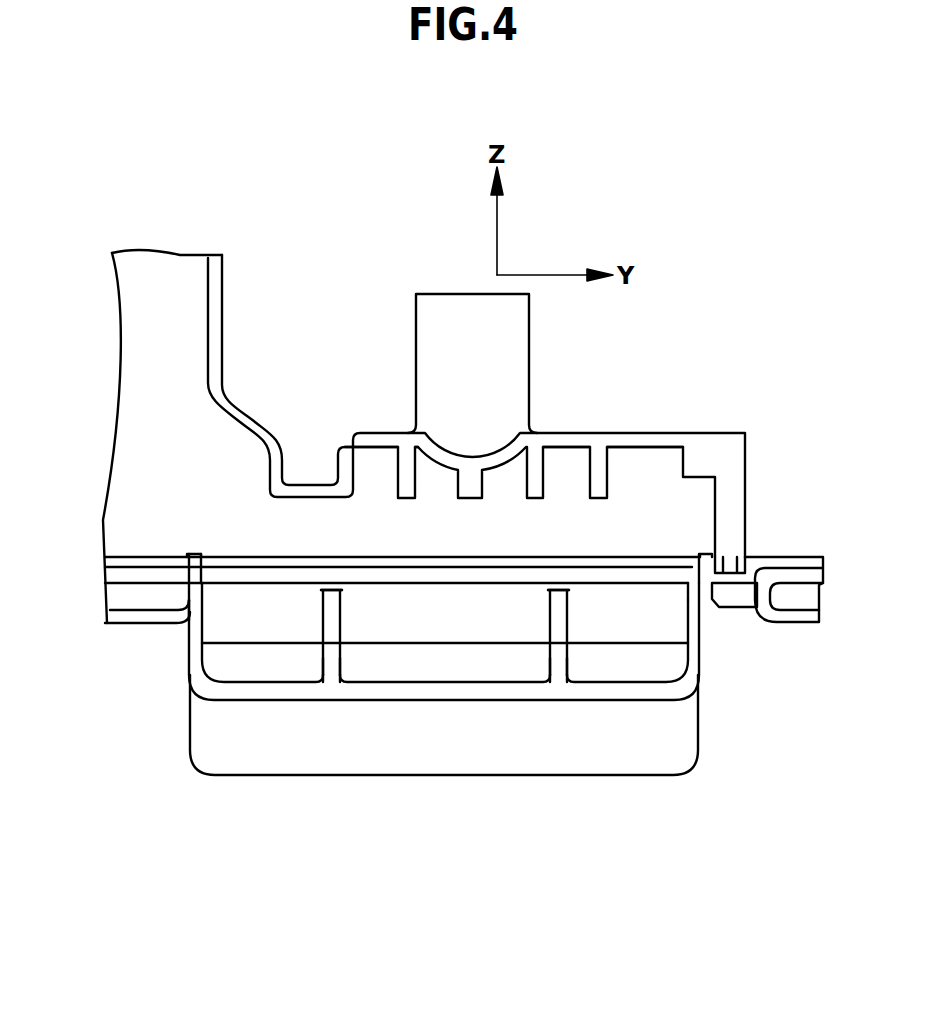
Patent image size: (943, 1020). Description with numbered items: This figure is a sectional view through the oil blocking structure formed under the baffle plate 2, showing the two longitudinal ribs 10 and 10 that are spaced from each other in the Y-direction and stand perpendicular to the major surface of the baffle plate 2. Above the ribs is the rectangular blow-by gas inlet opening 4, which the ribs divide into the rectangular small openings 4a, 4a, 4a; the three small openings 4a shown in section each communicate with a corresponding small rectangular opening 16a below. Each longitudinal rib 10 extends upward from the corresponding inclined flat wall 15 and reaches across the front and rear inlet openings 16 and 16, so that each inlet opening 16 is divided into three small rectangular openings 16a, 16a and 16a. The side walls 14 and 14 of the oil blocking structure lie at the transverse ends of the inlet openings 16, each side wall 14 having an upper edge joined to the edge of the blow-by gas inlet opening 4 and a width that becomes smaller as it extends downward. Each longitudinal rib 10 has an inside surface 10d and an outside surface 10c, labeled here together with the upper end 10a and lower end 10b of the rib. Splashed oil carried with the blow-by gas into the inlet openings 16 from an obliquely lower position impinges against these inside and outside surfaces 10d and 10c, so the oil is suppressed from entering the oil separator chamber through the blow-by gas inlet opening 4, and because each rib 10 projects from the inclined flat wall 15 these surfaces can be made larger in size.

The baffle plate 2 is at (806, 560).
The blow-by gas inlet opening 4 is at (391, 598).
The rectangular small opening 4a is at (262, 598).
The longitudinal rib 10 is at (341, 620).
The upper end of rib 10a is at (330, 587).
The lower end of rib 10b is at (331, 676).
The outside surface of longitudinal rib 10c is at (342, 662).
The inside surface of longitudinal rib 10d is at (320, 658).
The side wall 14 is at (195, 628).
The inclined flat wall 15 is at (222, 750).
The inlet opening 16 is at (422, 662).
The small rectangular opening 16a is at (222, 657).